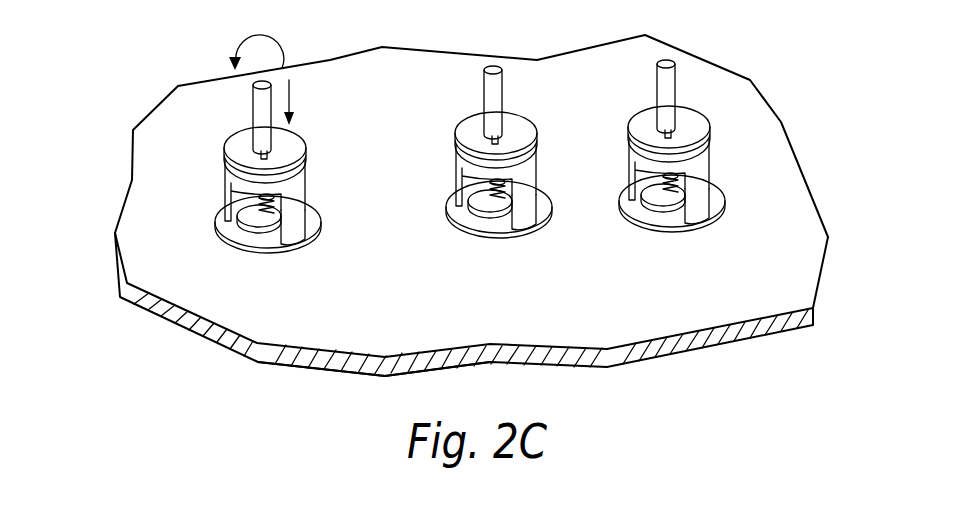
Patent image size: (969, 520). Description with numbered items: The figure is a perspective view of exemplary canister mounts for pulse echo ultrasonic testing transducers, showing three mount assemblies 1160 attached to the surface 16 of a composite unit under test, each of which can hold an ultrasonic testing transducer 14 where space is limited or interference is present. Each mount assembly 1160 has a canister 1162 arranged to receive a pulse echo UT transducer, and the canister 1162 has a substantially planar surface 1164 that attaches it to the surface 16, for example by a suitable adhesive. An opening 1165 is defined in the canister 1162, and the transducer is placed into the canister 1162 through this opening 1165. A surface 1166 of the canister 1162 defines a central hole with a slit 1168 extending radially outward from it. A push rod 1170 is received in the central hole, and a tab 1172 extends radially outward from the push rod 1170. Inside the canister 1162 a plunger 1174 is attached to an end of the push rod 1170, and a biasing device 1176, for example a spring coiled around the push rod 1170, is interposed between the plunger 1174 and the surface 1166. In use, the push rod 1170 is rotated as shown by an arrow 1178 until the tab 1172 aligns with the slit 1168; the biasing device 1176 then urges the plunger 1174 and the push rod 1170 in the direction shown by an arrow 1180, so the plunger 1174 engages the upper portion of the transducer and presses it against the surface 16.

The ultrasonic testing transducer 14 is at (116, 325).
The surface 16 is at (381, 312).
The mount assembly 1160 is at (456, 169).
The canister 1162 is at (225, 186).
The substantially planar surface 1164 is at (272, 258).
The opening 1165 is at (243, 246).
The surface of the canister 1166 is at (288, 150).
The slit 1168 is at (225, 150).
The push rod 1170 is at (253, 112).
The tab 1172 is at (484, 130).
The plunger 1174 is at (247, 215).
The biasing device 1176 is at (281, 230).
The arrow 1178 is at (286, 44).
The arrow 1180 is at (295, 92).